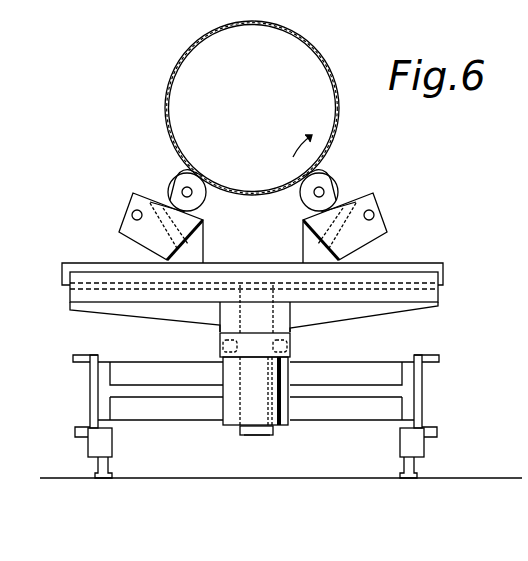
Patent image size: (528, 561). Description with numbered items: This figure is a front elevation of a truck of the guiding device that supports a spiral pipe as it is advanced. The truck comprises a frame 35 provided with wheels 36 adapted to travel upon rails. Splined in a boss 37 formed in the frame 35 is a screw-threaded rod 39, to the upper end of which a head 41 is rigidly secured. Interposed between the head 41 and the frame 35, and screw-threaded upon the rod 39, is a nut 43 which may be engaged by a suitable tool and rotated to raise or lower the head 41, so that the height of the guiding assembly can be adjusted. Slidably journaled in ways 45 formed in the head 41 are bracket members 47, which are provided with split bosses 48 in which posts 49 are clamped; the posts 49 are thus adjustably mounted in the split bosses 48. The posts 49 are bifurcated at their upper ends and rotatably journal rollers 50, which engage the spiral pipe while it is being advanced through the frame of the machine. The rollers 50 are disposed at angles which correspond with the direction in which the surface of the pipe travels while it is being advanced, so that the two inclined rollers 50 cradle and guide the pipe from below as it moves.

The frame 35 is at (385, 368).
The wheels 36 is at (403, 437).
The boss 37 is at (232, 418).
The screw-threaded rod 39 is at (253, 435).
The head 41 is at (436, 290).
The nut 43 is at (220, 343).
The ways 45 is at (404, 283).
The bracket members 47 is at (391, 262).
The split bosses 48 is at (157, 200).
The posts 49 is at (133, 237).
The rollers 50 is at (180, 180).